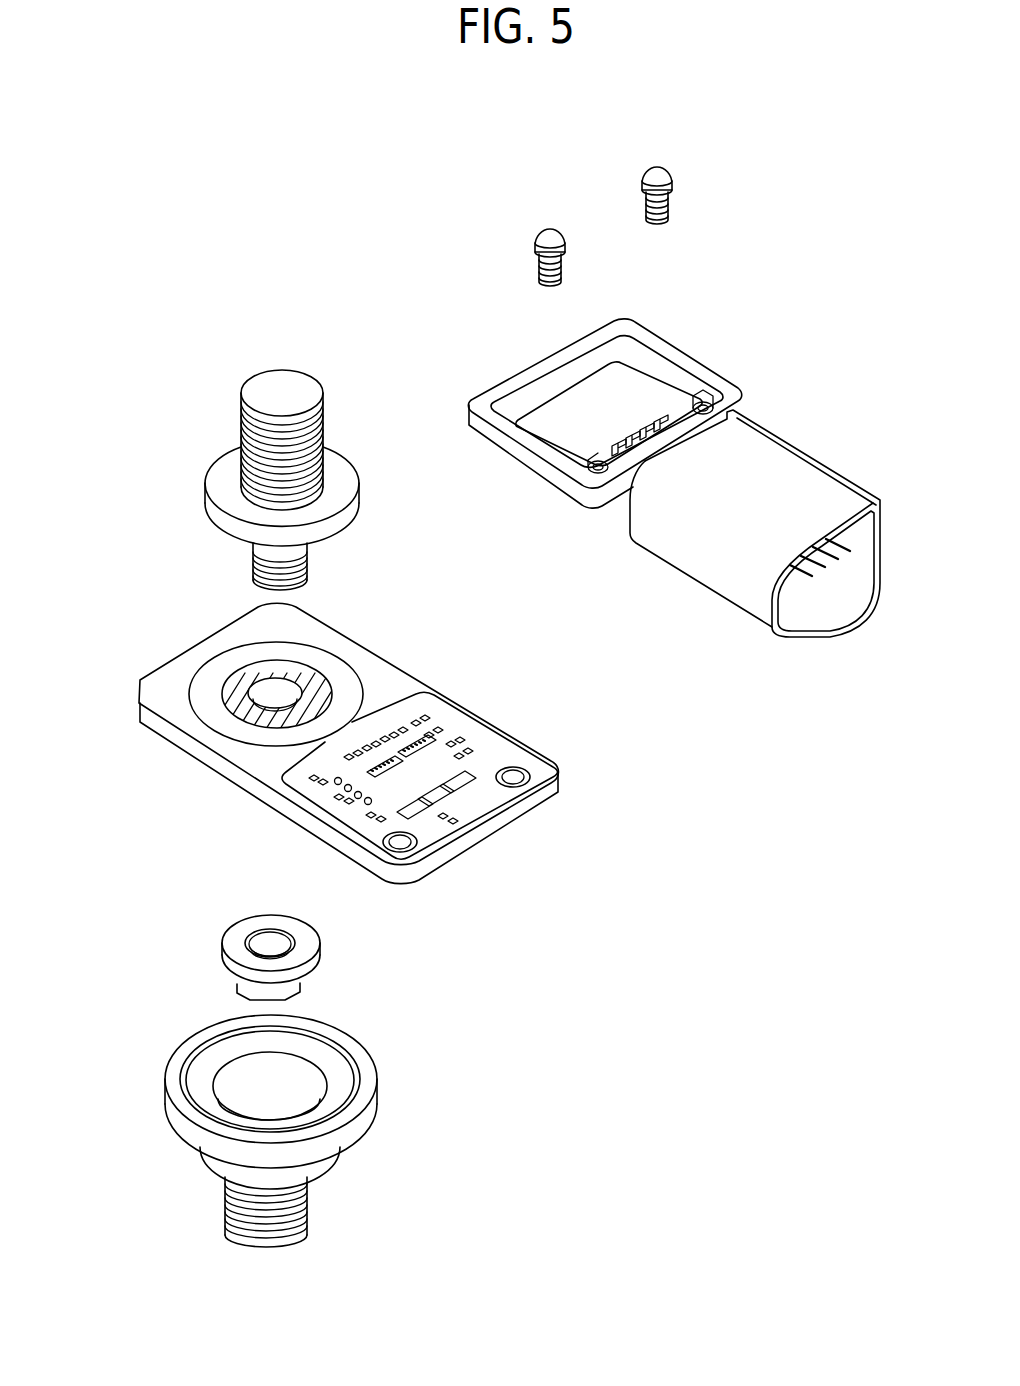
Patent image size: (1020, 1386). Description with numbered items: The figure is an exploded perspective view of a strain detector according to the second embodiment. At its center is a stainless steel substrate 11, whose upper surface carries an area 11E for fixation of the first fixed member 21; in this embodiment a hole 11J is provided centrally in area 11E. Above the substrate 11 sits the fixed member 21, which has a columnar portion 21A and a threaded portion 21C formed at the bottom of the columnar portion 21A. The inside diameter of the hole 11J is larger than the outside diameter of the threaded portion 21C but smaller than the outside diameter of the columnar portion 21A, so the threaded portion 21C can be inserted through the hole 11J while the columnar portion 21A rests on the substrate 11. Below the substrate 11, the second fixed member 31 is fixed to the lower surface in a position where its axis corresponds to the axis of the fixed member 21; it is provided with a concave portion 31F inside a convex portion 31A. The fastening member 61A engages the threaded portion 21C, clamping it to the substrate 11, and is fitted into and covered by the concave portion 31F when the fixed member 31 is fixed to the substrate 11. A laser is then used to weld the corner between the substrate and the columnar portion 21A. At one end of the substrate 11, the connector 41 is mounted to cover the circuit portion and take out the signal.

The substrate 11 is at (327, 737).
The area for fixation 11E is at (320, 695).
The hole 11J is at (277, 687).
The fixed member 21 is at (277, 435).
The columnar portion 21A is at (253, 551).
The threaded portion 21C is at (307, 560).
The second fixed member 31 is at (332, 1096).
The convex portion 31A is at (363, 1065).
The concave portion 31F is at (258, 1092).
The connector 41 is at (770, 457).
The fastening member 61A is at (222, 965).